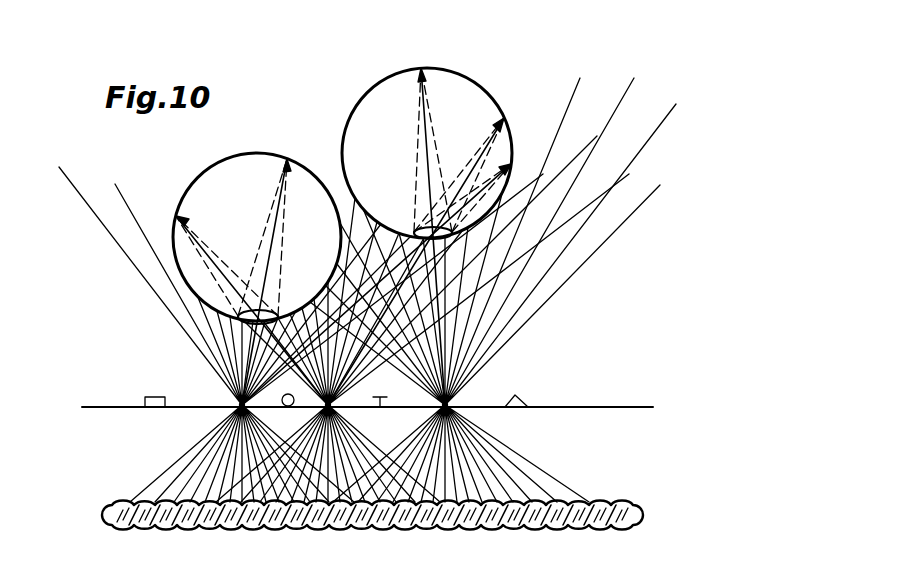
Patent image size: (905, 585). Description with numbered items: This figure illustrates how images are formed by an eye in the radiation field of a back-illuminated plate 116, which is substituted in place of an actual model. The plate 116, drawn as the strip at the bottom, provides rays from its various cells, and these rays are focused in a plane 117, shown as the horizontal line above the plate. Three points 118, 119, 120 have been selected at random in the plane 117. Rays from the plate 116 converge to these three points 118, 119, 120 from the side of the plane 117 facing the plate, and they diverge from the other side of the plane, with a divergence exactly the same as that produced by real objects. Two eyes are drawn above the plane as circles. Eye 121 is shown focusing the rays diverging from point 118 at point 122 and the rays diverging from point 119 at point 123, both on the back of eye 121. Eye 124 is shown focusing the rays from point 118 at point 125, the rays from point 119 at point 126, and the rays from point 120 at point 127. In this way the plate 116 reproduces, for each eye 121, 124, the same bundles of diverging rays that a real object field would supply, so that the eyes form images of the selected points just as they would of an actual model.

The plate 116 is at (114, 504).
The plane 117 is at (110, 405).
The point 118 is at (238, 408).
The point 119 is at (324, 408).
The point 120 is at (442, 408).
The eye 121 is at (213, 165).
The point 122 is at (287, 150).
The point 123 is at (180, 212).
The eye 124 is at (479, 86).
The point 125 is at (512, 161).
The point 126 is at (505, 120).
The point 127 is at (424, 68).